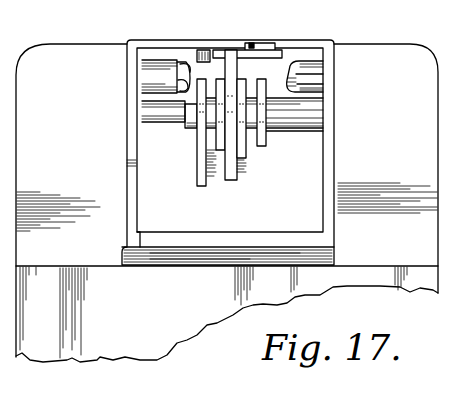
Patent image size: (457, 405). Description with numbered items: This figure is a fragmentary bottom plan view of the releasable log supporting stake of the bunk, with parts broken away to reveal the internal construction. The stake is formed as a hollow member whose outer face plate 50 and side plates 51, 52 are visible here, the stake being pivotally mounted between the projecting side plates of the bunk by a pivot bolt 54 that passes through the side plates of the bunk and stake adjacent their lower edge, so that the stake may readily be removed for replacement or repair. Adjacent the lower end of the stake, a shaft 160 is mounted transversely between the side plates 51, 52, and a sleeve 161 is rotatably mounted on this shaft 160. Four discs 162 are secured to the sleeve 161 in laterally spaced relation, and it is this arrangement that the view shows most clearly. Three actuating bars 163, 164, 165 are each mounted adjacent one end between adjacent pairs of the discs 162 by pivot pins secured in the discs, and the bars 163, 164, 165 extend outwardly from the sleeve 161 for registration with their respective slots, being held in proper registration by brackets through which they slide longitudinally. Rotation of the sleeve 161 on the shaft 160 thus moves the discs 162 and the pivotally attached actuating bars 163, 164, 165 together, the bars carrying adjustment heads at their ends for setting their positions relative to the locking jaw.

The outer face plate 50 is at (305, 40).
The side plate 51 is at (125, 188).
The side plate 52 is at (337, 170).
The pivot bolt 54 is at (180, 73).
The shaft 160 is at (152, 107).
The sleeve 161 is at (303, 131).
The discs 162 is at (220, 127).
The actuating bar 163 is at (212, 187).
The actuating bar 164 is at (233, 181).
The actuating bar 165 is at (248, 158).